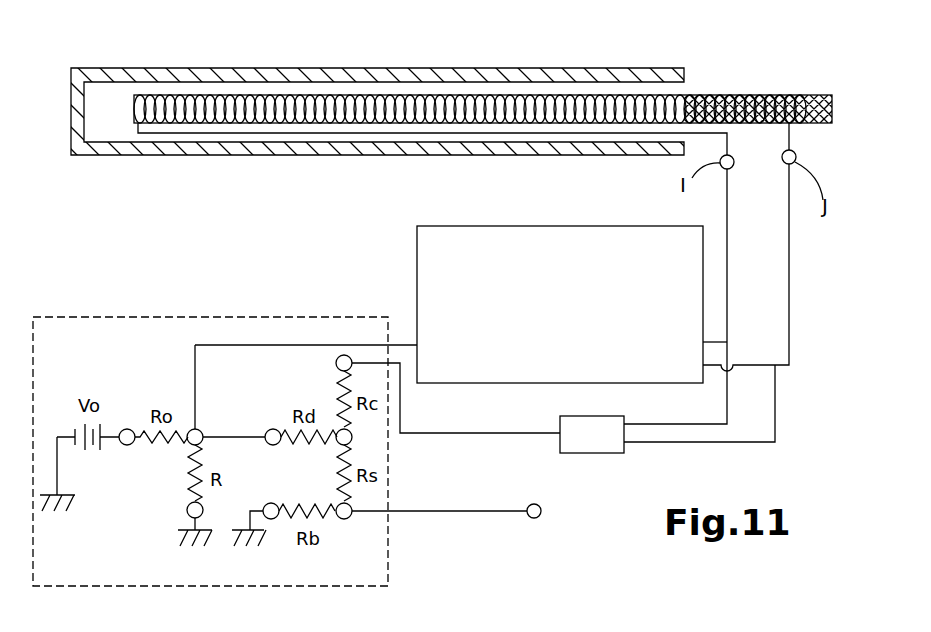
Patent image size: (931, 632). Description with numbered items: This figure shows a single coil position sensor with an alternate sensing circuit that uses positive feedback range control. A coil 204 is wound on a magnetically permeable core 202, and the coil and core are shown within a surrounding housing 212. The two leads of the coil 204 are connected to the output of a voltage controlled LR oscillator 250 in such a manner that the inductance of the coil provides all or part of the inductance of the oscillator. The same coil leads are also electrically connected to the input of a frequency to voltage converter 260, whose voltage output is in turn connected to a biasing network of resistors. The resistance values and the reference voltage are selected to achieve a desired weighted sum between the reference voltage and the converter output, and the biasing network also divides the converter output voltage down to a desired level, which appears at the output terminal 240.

The magnetically permeable core 202 is at (823, 95).
The coil 204 is at (345, 108).
The housing 212 is at (500, 74).
The output terminal 240 is at (538, 517).
The voltage controlled LR oscillator 250 is at (437, 267).
The frequency to voltage converter 260 is at (591, 441).